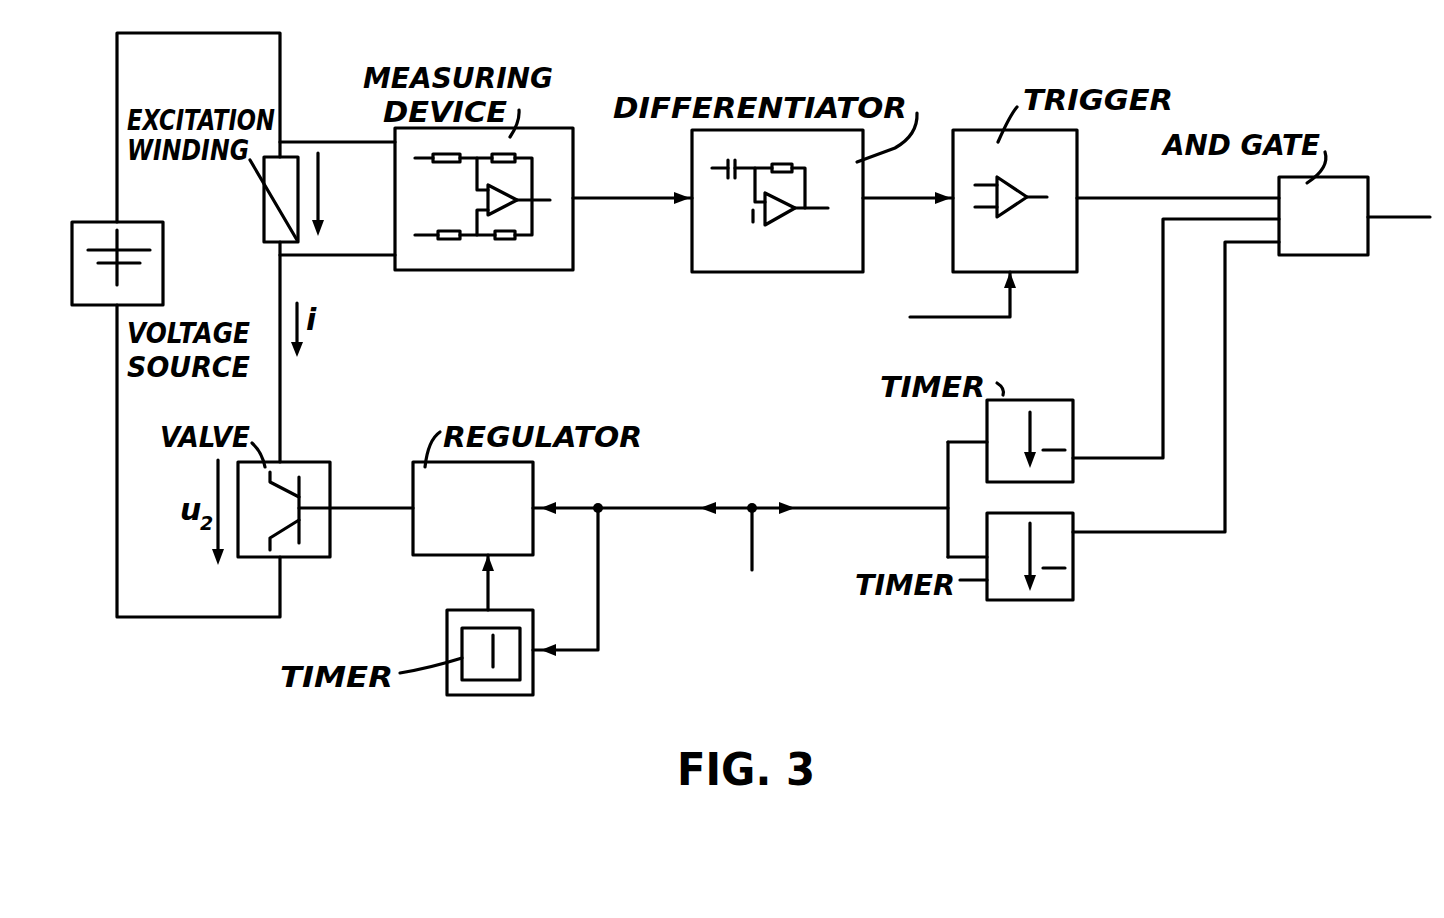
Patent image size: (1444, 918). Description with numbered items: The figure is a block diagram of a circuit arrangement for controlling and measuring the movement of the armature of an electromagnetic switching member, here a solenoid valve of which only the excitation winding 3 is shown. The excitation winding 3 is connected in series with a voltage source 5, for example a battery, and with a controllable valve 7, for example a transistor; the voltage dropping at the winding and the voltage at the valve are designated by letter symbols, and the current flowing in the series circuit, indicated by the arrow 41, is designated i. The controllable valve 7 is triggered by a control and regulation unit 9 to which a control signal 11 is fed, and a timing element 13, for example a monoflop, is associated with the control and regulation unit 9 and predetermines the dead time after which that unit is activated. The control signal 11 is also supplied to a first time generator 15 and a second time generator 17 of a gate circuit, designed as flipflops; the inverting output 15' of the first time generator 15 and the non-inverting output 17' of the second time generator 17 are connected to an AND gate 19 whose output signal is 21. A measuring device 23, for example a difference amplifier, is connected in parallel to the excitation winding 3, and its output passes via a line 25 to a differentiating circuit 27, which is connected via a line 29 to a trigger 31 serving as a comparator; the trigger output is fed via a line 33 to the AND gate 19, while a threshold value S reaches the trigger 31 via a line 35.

The excitation winding 3 is at (264, 225).
The voltage source 5 is at (86, 305).
The controllable valve 7 is at (323, 440).
The control and regulation unit 9 is at (525, 490).
The control signal 11 is at (770, 539).
The timing element 13 is at (455, 623).
The first time generator 15 is at (1037, 421).
The second time generator 17 is at (1060, 556).
The AND gate 19 is at (1302, 247).
The output signal of the AND gate 21 is at (1399, 199).
The measuring device 23 is at (423, 263).
The line 25 is at (652, 203).
The differentiating circuit 27 is at (817, 260).
The line 29 is at (877, 203).
The trigger 31 is at (1072, 167).
The line 33 is at (1143, 198).
The line 35 is at (972, 301).
The winding current arrow 41 is at (335, 194).
The timer T1 output line 15' is at (1176, 338).
The non-inverting output 17' is at (1180, 387).